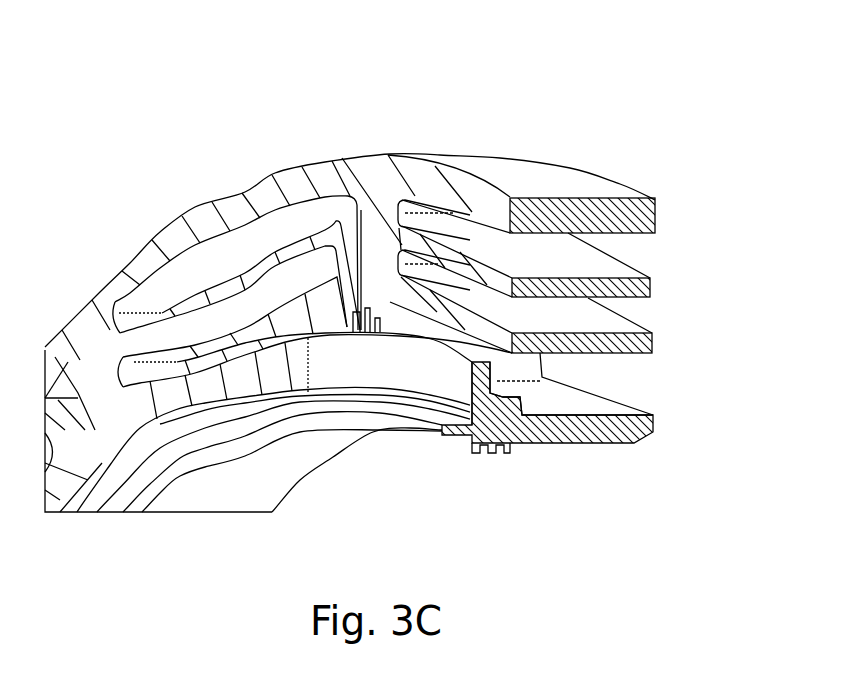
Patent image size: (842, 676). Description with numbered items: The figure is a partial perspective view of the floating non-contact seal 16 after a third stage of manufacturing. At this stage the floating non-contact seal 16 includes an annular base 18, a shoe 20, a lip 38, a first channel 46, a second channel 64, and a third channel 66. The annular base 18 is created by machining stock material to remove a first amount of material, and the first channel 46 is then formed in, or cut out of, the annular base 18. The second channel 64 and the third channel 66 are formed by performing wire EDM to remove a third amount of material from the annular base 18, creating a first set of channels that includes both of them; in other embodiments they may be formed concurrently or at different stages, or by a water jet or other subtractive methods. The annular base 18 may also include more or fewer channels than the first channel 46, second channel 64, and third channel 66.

The floating non-contact seal 16 is at (202, 92).
The annular base 18 is at (557, 180).
The shoe 20 is at (570, 447).
The lip 38 is at (478, 375).
The first channel 46 is at (583, 400).
The second channel 64 is at (590, 317).
The third channel 66 is at (588, 262).